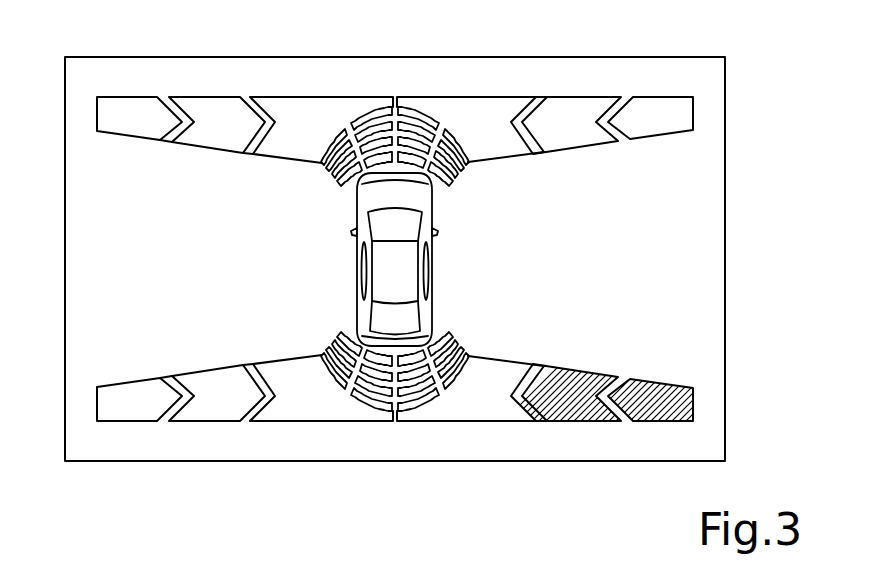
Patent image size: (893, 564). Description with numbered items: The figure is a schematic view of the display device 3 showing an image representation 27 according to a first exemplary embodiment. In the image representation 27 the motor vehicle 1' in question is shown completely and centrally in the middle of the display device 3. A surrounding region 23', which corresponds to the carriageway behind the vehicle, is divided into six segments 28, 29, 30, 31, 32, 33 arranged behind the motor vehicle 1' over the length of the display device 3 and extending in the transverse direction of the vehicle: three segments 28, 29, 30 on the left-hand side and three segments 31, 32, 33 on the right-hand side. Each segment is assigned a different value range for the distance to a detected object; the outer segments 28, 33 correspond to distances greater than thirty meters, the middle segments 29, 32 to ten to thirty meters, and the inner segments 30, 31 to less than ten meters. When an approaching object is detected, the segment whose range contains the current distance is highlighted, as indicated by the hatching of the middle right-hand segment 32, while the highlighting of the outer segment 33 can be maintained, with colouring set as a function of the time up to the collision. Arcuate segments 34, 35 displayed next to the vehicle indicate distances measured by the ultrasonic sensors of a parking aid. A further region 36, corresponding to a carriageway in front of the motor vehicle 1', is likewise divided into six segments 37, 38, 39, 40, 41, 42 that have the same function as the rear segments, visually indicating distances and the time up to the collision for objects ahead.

The motor vehicle 1' is at (434, 259).
The display device 3 is at (727, 172).
The surrounding region 23' is at (175, 333).
The image representation 27 is at (701, 251).
The outer left-hand segment 28 is at (135, 412).
The middle left-hand segment 29 is at (227, 412).
The inner left-hand segment 30 is at (328, 412).
The inner right-hand segment 31 is at (480, 412).
The middle right-hand segment 32 is at (585, 412).
The outer right-hand segment 33 is at (655, 412).
The arcuate segment 34 is at (460, 325).
The arcuate segment 35 is at (459, 189).
The further region 36 is at (183, 166).
The front segment 37 is at (124, 100).
The front segment 38 is at (211, 100).
The front segment 39 is at (307, 100).
The front segment 40 is at (472, 102).
The front segment 41 is at (575, 102).
The front segment 42 is at (663, 102).